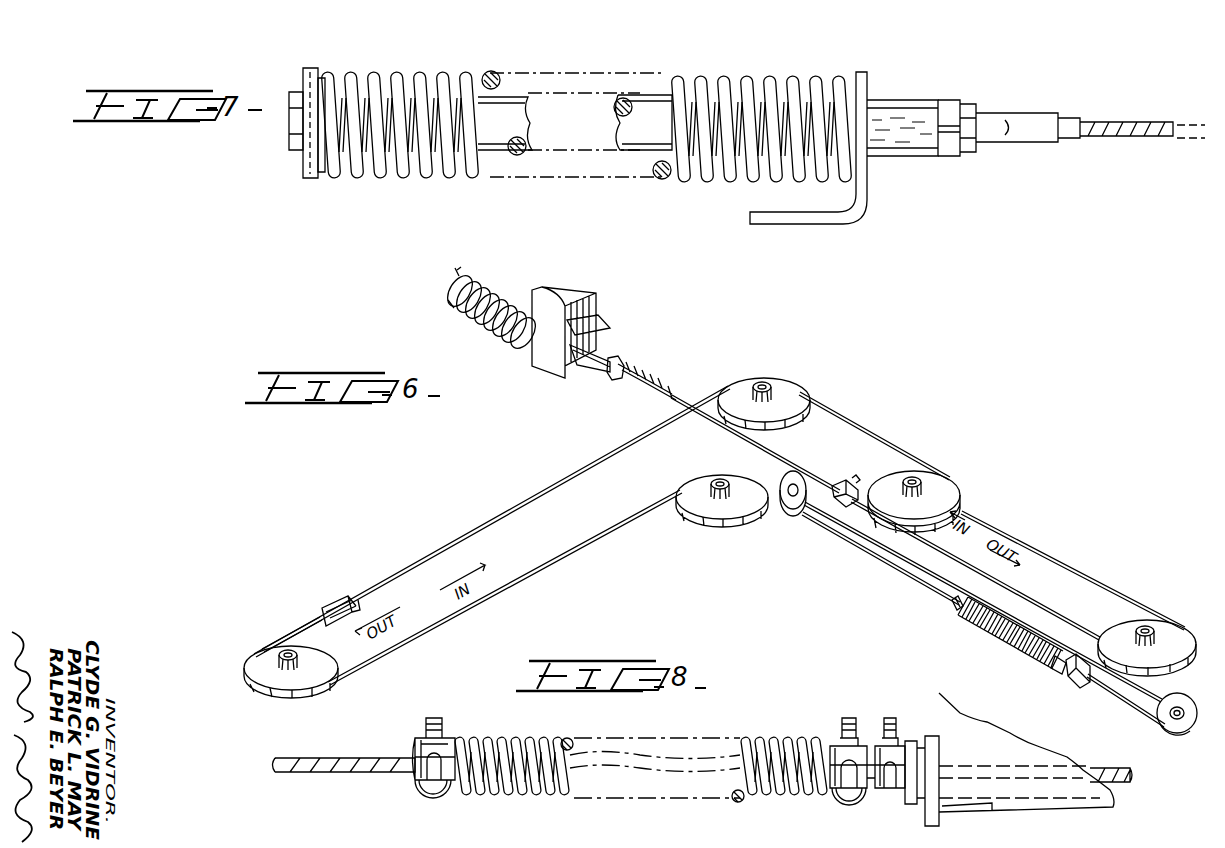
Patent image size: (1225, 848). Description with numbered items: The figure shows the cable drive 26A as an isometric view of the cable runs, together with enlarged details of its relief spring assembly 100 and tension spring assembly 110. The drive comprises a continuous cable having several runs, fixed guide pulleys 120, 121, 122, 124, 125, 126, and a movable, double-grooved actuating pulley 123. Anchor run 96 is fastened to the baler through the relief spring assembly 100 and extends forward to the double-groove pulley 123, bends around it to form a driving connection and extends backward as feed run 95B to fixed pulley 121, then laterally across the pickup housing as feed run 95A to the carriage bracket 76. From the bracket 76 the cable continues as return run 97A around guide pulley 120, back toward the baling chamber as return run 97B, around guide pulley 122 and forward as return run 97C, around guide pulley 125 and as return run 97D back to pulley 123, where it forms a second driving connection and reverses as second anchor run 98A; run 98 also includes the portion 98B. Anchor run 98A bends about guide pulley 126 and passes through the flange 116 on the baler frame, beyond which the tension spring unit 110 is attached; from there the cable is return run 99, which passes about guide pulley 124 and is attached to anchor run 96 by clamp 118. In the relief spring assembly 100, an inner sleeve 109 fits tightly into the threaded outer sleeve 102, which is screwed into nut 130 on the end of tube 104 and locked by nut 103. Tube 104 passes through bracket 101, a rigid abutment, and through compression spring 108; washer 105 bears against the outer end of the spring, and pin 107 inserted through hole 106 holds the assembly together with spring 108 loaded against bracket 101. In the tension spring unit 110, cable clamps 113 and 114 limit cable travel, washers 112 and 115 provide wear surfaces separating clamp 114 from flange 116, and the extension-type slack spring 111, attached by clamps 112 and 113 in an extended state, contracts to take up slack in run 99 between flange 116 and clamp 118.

In FIG. 6, the cable drive 26A is at (972, 426).
In FIG. 6, the carriage bracket 76 is at (347, 585).
In FIG. 6, the feed run 95A is at (556, 483).
In FIG. 6, the feed run 95B is at (885, 432).
In FIG. 7, the anchor run 96 is at (1130, 122).
In FIG. 6, the anchor run 96 is at (736, 432).
In FIG. 6, the return run 97A is at (276, 645).
In FIG. 6, the return run 97B is at (556, 580).
In FIG. 6, the return run 97C is at (940, 574).
In FIG. 6, the return run 97D is at (1040, 552).
In FIG. 8, the cable run 98 is at (1128, 784).
In FIG. 6, the second anchor run 98A is at (1008, 575).
In FIG. 6, the anchor run portion 98B is at (1138, 710).
In FIG. 6, the return run 99 is at (845, 548).
In FIG. 8, the return run 99 is at (368, 750).
In FIG. 7, the relief spring assembly 100 is at (476, 203).
In FIG. 6, the relief spring assembly 100 is at (504, 283).
In FIG. 7, the bracket 101 is at (867, 200).
In FIG. 6, the bracket 101 is at (590, 290).
In FIG. 7, the outer sleeve 102 is at (1058, 116).
In FIG. 6, the outer sleeve 102 is at (650, 372).
In FIG. 7, the nut 103 is at (968, 104).
In FIG. 7, the tube 104 is at (505, 107).
In FIG. 7, the washer 105 is at (320, 70).
In FIG. 7, the hole 106 is at (295, 118).
In FIG. 7, the pin 107 is at (315, 172).
In FIG. 7, the compression spring 108 is at (340, 165).
In FIG. 7, the inner sleeve 109 is at (1072, 138).
In FIG. 6, the tension spring assembly 110 is at (1006, 647).
In FIG. 8, the tension spring assembly 110 is at (679, 818).
In FIG. 8, the slack spring 111 is at (540, 740).
In FIG. 8, the washer and cable clamp 112 is at (426, 720).
In FIG. 8, the cable clamp 113 is at (849, 718).
In FIG. 8, the cable clamp 114 is at (890, 718).
In FIG. 8, the washer 115 is at (911, 804).
In FIG. 6, the flange 116 is at (1075, 688).
In FIG. 8, the flange 116 is at (930, 736).
In FIG. 6, the clamp 118 is at (855, 482).
In FIG. 6, the fixed guide pulley 120 is at (270, 680).
In FIG. 6, the fixed pulley 121 is at (790, 390).
In FIG. 6, the fixed guide pulley 122 is at (712, 518).
In FIG. 6, the double-grooved actuating pulley 123 is at (950, 485).
In FIG. 6, the fixed guide pulley 124 is at (793, 510).
In FIG. 6, the fixed guide pulley 125 is at (1165, 635).
In FIG. 6, the fixed guide pulley 126 is at (1172, 734).
In FIG. 7, the nut 130 is at (948, 156).